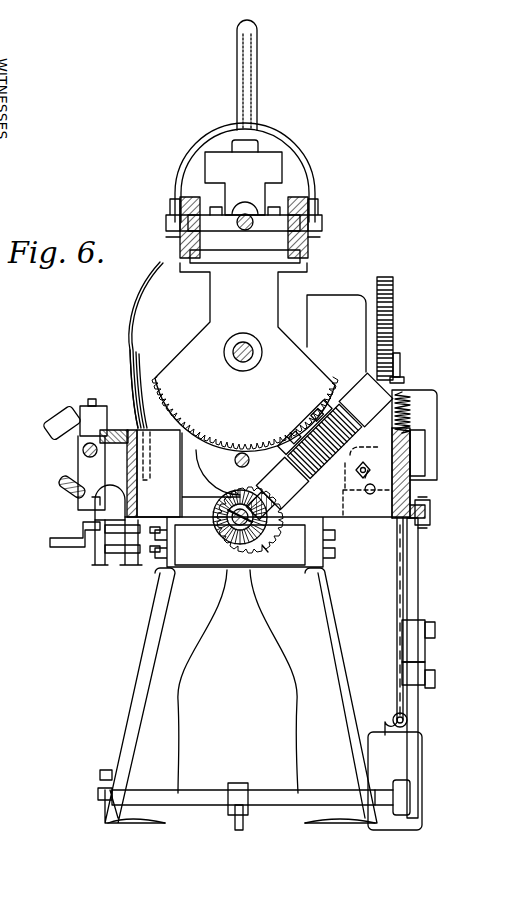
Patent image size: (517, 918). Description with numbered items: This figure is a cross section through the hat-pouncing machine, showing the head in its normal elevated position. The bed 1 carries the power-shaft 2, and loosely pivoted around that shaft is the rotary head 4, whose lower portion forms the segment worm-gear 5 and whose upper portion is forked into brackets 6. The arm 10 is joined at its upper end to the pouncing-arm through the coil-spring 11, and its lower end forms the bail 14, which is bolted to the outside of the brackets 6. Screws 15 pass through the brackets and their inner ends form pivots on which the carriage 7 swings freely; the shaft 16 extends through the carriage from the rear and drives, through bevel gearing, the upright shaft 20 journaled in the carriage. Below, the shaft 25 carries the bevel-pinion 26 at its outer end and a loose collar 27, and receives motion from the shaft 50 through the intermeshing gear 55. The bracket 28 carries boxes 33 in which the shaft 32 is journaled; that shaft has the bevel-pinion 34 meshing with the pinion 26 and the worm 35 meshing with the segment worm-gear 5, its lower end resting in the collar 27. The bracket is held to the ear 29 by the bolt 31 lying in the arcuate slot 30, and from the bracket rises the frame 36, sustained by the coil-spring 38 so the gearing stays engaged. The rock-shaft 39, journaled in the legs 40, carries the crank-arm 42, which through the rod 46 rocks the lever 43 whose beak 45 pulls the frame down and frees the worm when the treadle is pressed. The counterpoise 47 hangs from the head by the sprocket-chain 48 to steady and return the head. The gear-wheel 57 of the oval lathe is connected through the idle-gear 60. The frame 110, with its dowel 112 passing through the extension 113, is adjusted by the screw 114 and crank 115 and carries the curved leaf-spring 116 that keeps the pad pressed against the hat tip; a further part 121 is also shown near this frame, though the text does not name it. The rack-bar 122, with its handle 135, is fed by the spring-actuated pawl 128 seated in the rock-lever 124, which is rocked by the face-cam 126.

The bed 1 is at (126, 428).
The power-shaft 2 is at (236, 346).
The rotary head 4 is at (260, 357).
The segment worm-gear 5 is at (148, 386).
The brackets 6 is at (186, 258).
The carriage 7 is at (258, 172).
The arm 10 is at (250, 76).
The coil-spring 11 is at (238, 79).
The bail 14 is at (288, 140).
The screws 15 is at (183, 218).
The shaft 16 is at (262, 213).
The upright shaft 20 is at (240, 146).
The shaft 25 is at (222, 540).
The bevel-pinion 26 is at (233, 538).
The collar 27 is at (230, 522).
The bracket 28 is at (418, 450).
The ear 29 is at (267, 507).
The arcuate slot 30 is at (370, 490).
The bolt 31 is at (372, 470).
The shaft 32 is at (250, 520).
The boxes 33 is at (316, 449).
The bevel-pinion 34 is at (216, 488).
The worm 35 is at (343, 392).
The frame 36 is at (425, 390).
The coil-spring 38 is at (410, 412).
The rock-shaft 39 is at (198, 792).
The legs 40 is at (241, 695).
The crank-arm 42 is at (417, 712).
The lever 43 is at (410, 572).
The beak 45 is at (418, 462).
The rod 46 is at (425, 656).
The counterpoise 47 is at (395, 781).
The sprocket-chain 48 is at (395, 647).
The shaft 50 is at (235, 460).
The gear 55 is at (262, 546).
The gear-wheel 57 is at (394, 331).
The idle-gear 60 is at (401, 363).
The frame 110 is at (94, 511).
The dowel 112 is at (112, 560).
The extension 113 is at (137, 560).
The screw 114 is at (136, 539).
The crank 115 is at (72, 540).
The leaf-spring 116 is at (132, 330).
The screw 121 is at (60, 488).
The rack-bar 122 is at (83, 450).
The rock-lever 124 is at (82, 407).
The face-cam 126 is at (159, 473).
The spring-actuated pawl 128 is at (100, 394).
The handle 135 is at (52, 412).